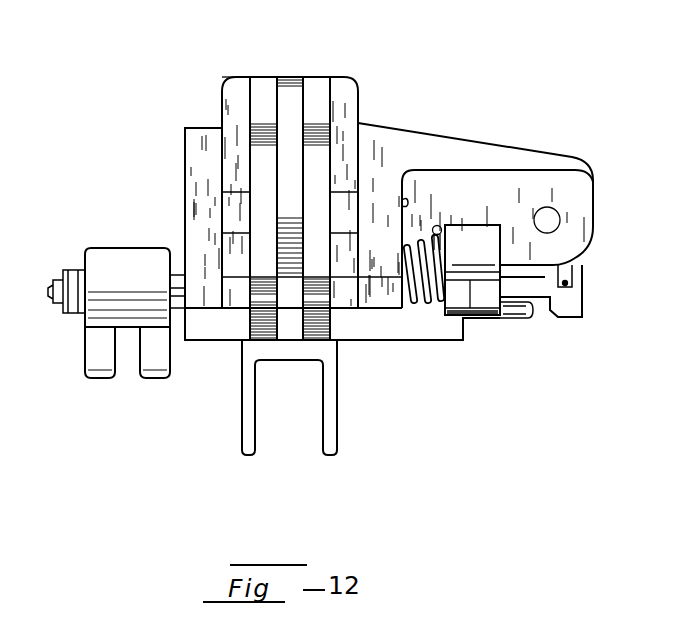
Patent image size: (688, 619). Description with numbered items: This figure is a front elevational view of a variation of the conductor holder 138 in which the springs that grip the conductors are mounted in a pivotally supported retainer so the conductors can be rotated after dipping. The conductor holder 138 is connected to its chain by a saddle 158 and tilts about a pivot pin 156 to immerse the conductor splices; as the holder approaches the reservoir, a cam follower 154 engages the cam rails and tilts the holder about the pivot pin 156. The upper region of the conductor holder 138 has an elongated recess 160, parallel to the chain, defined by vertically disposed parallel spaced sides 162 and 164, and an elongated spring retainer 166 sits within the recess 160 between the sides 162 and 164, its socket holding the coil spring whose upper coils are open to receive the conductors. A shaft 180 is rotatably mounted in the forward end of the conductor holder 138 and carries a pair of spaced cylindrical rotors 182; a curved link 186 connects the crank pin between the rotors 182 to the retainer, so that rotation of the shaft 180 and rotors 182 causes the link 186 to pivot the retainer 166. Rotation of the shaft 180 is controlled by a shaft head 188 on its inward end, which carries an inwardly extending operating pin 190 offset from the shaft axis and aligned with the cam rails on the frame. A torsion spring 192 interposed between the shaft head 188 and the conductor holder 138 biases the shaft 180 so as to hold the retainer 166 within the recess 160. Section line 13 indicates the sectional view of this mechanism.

The section line 13- 13 is at (303, 77).
The conductor holder 138 is at (363, 80).
The cam follower 154 is at (95, 345).
The pivot pin 156 is at (562, 230).
The saddle 158 is at (337, 420).
The recess 160 is at (358, 115).
The side 162 is at (362, 205).
The side 164 is at (222, 207).
The spring retainer 166 is at (232, 113).
The shaft 180 is at (425, 313).
The cylindrical rotor 182 is at (260, 337).
The curved link 186 is at (297, 100).
The shaft head 188 is at (472, 270).
The operating pin 190 is at (517, 320).
The torsion spring 192 is at (405, 245).